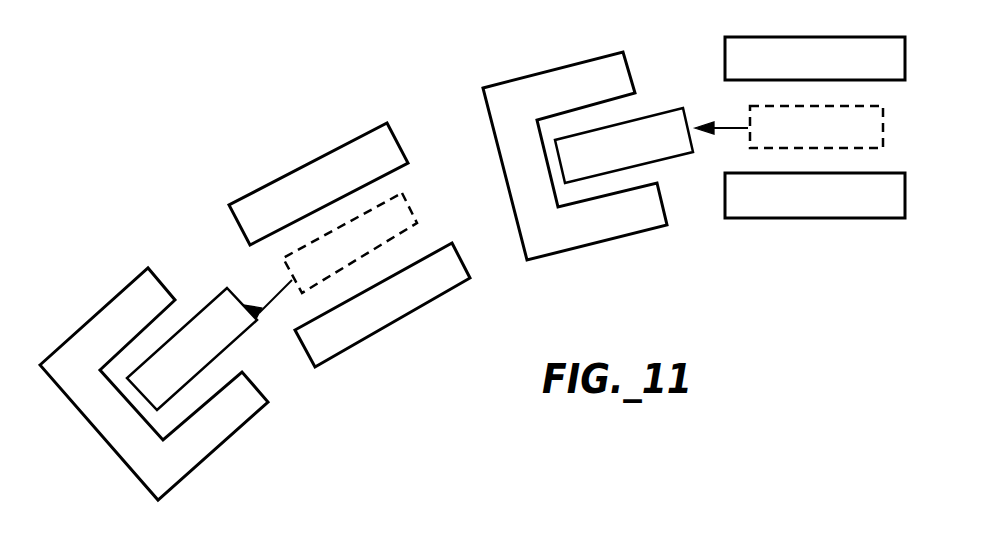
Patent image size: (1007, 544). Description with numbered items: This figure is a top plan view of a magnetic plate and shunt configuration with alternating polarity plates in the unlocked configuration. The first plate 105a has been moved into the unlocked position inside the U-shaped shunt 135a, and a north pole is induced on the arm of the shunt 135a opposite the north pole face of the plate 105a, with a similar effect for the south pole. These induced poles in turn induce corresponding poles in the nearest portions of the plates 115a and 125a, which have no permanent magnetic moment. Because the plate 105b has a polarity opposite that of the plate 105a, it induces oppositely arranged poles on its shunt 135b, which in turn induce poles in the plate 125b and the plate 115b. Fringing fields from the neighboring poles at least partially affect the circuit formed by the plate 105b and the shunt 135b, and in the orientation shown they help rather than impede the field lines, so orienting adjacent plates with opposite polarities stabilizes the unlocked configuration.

The first plate 105a is at (198, 312).
The plate 115a is at (362, 345).
The plate 125a is at (335, 153).
The shunt 135a is at (125, 287).
The plate 105b is at (748, 116).
The plate 115b is at (793, 218).
The plate 125b is at (850, 37).
The shunt 135b is at (573, 63).